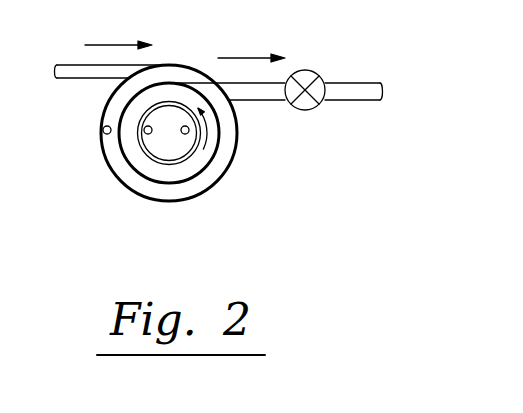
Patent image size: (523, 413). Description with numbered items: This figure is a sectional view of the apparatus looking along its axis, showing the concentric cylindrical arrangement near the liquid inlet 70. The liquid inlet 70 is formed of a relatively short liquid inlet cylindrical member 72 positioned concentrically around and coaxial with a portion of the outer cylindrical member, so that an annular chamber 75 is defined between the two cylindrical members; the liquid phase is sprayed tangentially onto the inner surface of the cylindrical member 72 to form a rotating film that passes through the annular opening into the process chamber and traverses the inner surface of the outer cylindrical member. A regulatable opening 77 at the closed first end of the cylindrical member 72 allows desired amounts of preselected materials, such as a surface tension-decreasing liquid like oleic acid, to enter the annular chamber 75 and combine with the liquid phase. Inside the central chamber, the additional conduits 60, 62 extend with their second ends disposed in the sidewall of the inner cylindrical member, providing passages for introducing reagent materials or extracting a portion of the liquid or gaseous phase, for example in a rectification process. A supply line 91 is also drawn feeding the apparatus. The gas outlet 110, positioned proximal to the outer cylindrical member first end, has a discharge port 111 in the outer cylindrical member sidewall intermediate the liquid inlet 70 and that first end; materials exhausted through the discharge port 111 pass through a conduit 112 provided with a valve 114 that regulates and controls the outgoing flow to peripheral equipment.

The additional conduit 60 is at (144, 128).
The additional conduit 62 is at (185, 134).
The liquid inlet 70 is at (132, 192).
The liquid inlet cylindrical member 72 is at (217, 164).
The annular chamber 75 is at (220, 172).
The regulatable opening 77 is at (104, 133).
The inlet conduit 91 is at (80, 65).
The gas outlet 110 is at (187, 93).
The discharge port 111 is at (198, 84).
The conduit 112 is at (267, 100).
The valve 114 is at (313, 75).